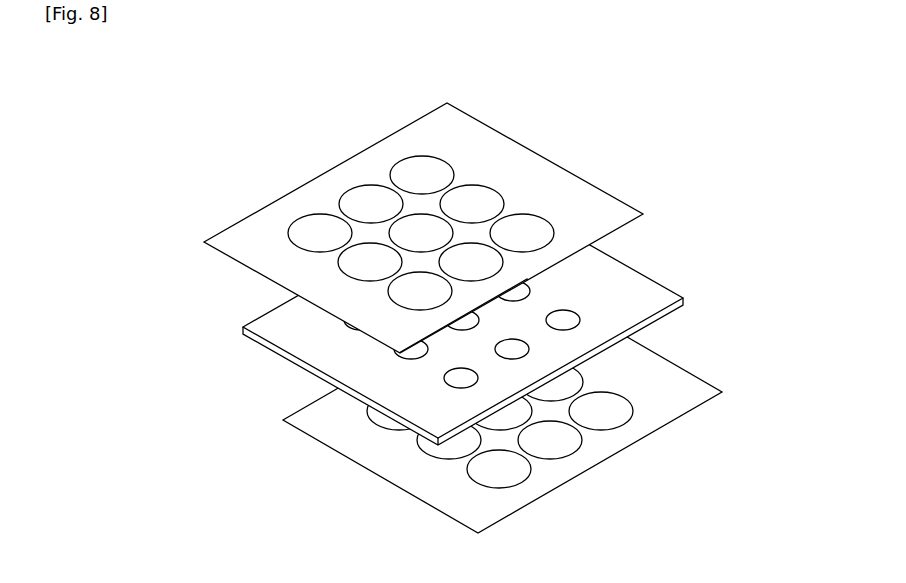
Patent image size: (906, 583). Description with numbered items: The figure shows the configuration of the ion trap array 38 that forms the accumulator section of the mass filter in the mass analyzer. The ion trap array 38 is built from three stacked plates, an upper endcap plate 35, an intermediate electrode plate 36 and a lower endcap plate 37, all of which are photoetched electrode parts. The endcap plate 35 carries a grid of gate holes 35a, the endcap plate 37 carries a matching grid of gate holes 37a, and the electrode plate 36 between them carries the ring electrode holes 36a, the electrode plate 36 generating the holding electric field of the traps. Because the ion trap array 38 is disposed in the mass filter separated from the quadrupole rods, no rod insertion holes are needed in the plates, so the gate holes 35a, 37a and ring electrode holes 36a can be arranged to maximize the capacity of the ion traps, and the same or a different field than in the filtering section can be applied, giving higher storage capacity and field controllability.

The ion trap array 38 is at (93, 295).
The endcap plate 35 is at (260, 249).
The gate holes 35a is at (440, 164).
The electrode plate 36 is at (278, 318).
The ring electrode holes 36a is at (568, 314).
The endcap plate 37 is at (322, 418).
The gate holes 37a is at (620, 413).